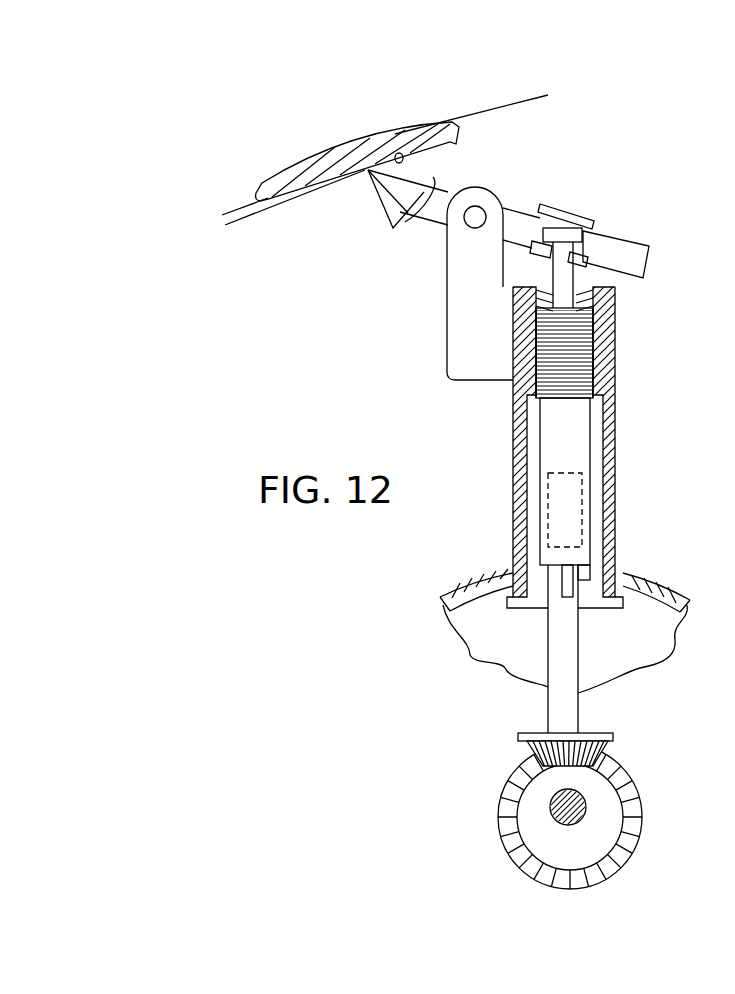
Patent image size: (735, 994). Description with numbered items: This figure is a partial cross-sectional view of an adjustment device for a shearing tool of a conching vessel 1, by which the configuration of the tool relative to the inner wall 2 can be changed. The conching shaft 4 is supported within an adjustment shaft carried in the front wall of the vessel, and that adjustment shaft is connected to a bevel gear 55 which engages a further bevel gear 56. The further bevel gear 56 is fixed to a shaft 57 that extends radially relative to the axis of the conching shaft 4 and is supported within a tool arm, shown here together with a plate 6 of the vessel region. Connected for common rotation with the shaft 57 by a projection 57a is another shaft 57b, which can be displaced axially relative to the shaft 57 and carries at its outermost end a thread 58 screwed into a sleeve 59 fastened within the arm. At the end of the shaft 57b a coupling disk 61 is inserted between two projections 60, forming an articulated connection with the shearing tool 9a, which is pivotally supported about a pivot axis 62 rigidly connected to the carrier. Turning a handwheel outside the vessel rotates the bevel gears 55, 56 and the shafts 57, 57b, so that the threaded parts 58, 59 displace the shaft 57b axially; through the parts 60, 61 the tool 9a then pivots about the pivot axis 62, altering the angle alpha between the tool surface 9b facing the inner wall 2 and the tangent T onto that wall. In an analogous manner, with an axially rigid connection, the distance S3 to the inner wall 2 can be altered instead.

The conching vessel 1 is at (298, 158).
The inner wall 2 is at (399, 153).
The conching shaft 4 is at (550, 818).
The plate 6 is at (583, 215).
The shearing tool 9a is at (400, 195).
The surface 9b is at (433, 177).
The bevel gear 55 is at (616, 868).
The bevel gear 56 is at (518, 738).
The shaft 57 is at (570, 648).
The projection 57a is at (577, 578).
The shaft 57b is at (577, 445).
The thread 58 is at (593, 358).
The sleeve 59 is at (537, 357).
The projections 60 is at (540, 256).
The disk 61 is at (648, 236).
The pivot axis 62 is at (470, 224).
The distance S3 is at (238, 219).
The tangent line T is at (542, 95).